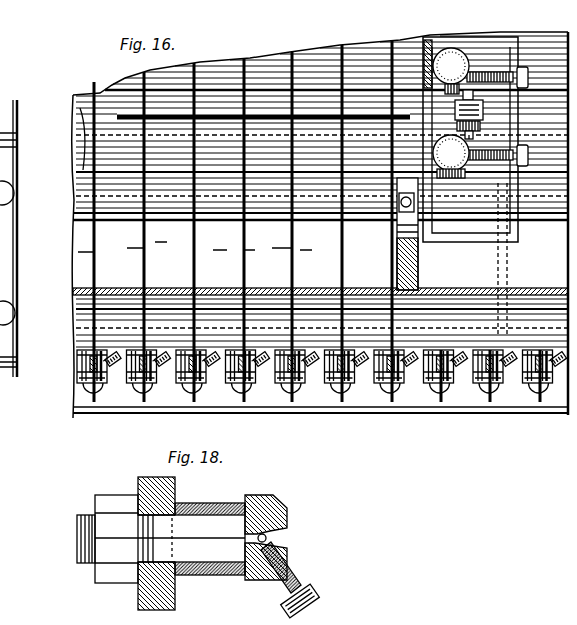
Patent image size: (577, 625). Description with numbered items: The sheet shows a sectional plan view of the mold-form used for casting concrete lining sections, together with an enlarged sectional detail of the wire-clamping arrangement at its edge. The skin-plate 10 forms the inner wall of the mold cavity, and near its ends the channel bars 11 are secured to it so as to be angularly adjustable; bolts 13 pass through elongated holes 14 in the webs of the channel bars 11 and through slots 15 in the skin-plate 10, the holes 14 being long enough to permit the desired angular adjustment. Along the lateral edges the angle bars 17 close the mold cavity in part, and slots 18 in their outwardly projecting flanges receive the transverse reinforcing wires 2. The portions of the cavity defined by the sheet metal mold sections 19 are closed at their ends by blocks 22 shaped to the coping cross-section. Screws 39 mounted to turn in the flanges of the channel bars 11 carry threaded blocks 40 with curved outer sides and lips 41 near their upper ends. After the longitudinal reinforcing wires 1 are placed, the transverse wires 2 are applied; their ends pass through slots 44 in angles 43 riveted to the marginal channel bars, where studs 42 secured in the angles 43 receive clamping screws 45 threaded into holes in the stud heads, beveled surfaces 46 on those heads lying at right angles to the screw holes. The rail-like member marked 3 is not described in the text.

In FIG. 16, the longitudinal reinforcing wires 1 is at (86, 130).
In FIG. 16, the transverse reinforcing wires 2 is at (195, 248).
In FIG. 18, the transverse reinforcing wires 2 is at (270, 540).
In FIG. 16, the horizontal rail 3 is at (325, 222).
In FIG. 16, the skin-plate 10 is at (73, 203).
In FIG. 16, the channel bars 11 is at (472, 232).
In FIG. 16, the bolts 13 is at (483, 110).
In FIG. 16, the elongated holes 14 is at (481, 128).
In FIG. 16, the slots 15 is at (290, 120).
In FIG. 16, the angle bars 17 is at (73, 318).
In FIG. 16, the slots 18 is at (240, 288).
In FIG. 18, the sheet metal mold sections 19 is at (95, 538).
In FIG. 16, the blocks 22 is at (396, 238).
In FIG. 16, the screws 39 is at (479, 72).
In FIG. 16, the blocks 40 is at (442, 188).
In FIG. 16, the lips 41 is at (462, 82).
In FIG. 16, the studs 42 is at (134, 384).
In FIG. 18, the studs 42 is at (161, 539).
In FIG. 16, the angles 43 is at (78, 400).
In FIG. 18, the angles 43 is at (140, 602).
In FIG. 18, the slots 44 is at (278, 537).
In FIG. 16, the clamping screws 45 is at (207, 375).
In FIG. 18, the clamping screws 45 is at (312, 588).
In FIG. 18, the beveled surfaces 46 is at (263, 577).